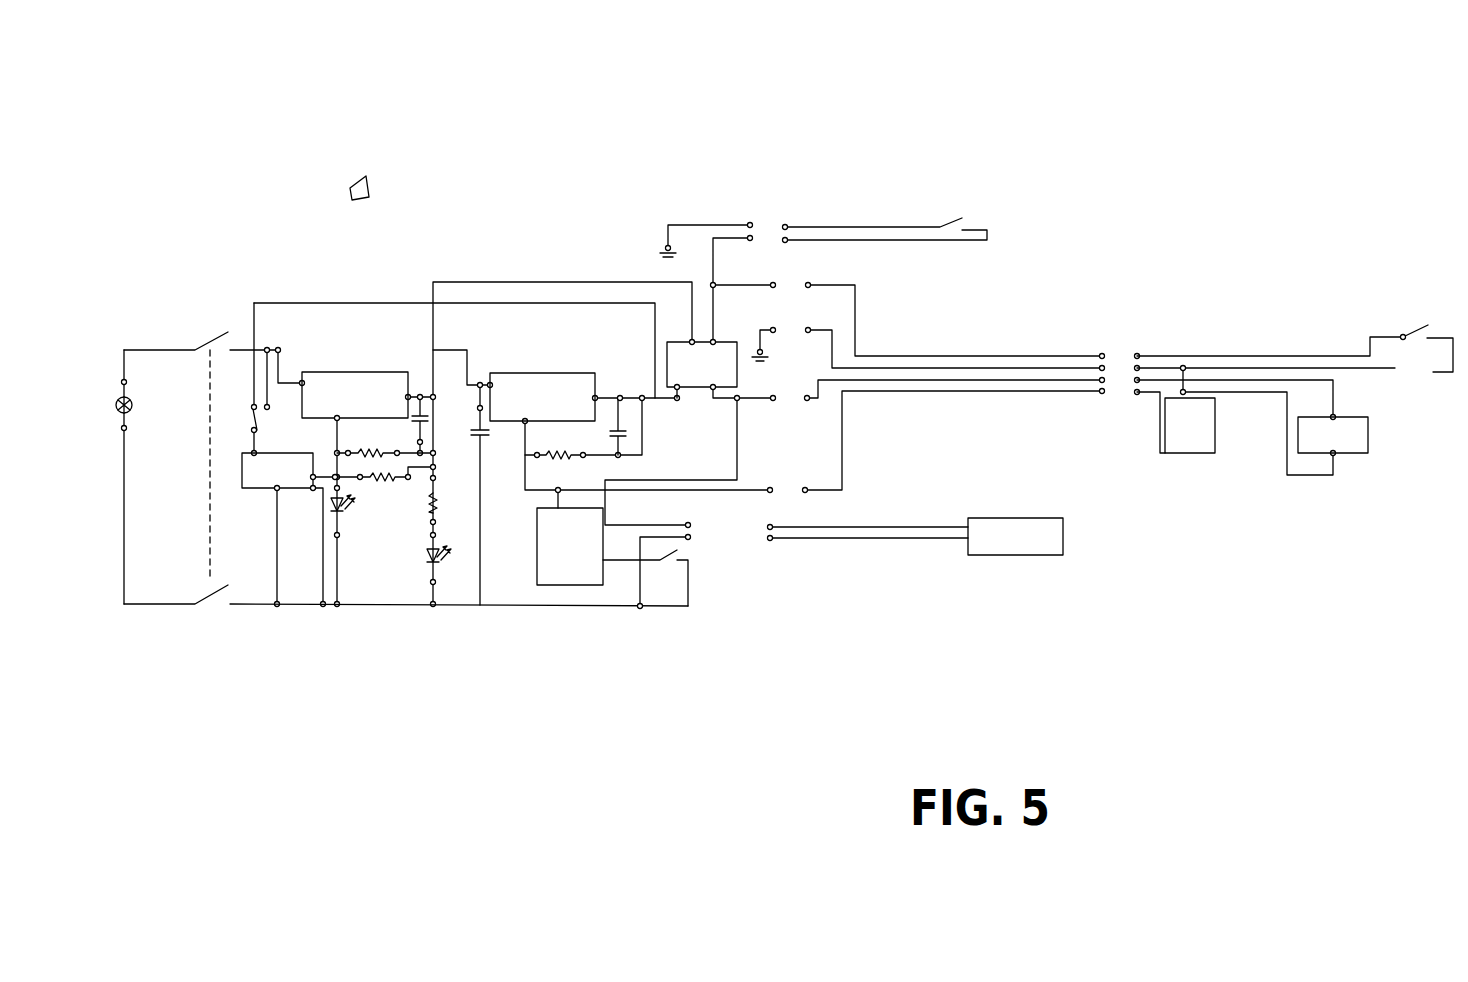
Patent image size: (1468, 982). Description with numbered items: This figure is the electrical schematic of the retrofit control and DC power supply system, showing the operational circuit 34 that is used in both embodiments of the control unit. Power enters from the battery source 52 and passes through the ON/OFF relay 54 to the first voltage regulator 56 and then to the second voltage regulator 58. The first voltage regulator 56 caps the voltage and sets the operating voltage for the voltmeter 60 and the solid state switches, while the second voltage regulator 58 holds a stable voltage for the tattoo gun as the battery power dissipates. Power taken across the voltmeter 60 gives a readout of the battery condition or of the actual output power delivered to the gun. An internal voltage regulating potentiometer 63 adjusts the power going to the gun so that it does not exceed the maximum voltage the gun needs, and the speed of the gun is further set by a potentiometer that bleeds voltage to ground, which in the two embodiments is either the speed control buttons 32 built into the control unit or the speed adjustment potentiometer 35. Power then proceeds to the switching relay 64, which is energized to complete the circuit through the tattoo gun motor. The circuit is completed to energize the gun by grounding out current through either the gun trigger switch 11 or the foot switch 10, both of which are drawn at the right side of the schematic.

The foot switch 10 is at (962, 213).
The gun trigger switch 11 is at (1422, 353).
The speed control buttons 32 is at (590, 573).
The operational circuit 34 is at (352, 185).
The speed adjustment potentiometer 35 is at (1202, 442).
The battery source 52 is at (132, 397).
The ON/OFF relay 54 is at (219, 340).
The first voltage regulator 56 is at (370, 372).
The second voltage regulator 58 is at (563, 373).
The voltmeter 60 is at (263, 493).
The internal voltage regulating potentiometer 63 is at (352, 522).
The switching relay 64 is at (677, 357).